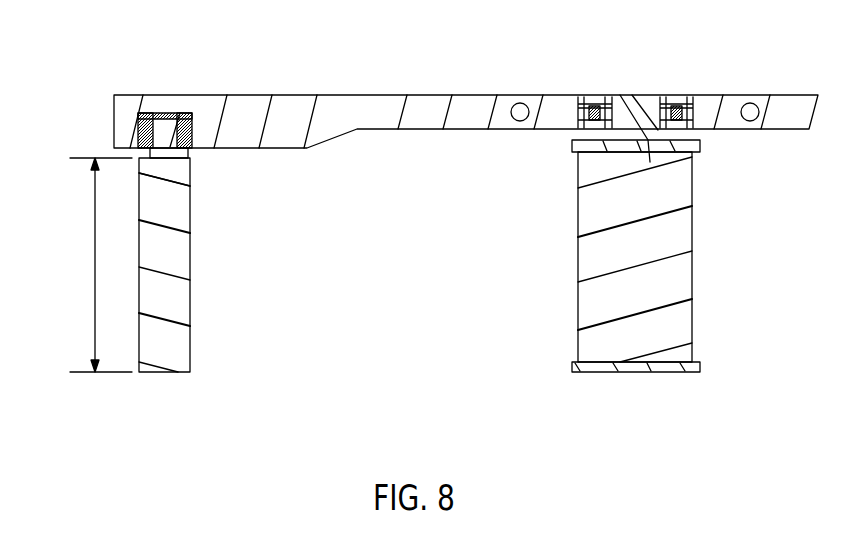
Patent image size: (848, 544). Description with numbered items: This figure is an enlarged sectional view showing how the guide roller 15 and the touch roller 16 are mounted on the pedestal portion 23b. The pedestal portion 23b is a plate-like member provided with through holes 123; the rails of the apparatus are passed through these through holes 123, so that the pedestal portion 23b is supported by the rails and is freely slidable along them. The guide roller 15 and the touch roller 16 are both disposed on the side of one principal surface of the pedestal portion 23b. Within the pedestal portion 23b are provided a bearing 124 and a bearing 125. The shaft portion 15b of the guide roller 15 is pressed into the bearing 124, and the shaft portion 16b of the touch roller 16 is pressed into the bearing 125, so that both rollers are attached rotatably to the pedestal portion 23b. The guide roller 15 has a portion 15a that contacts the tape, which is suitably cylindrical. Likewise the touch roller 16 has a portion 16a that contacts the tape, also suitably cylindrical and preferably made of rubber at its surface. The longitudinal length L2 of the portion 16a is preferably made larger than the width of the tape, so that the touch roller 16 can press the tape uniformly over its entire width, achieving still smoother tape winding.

The pedestal portion 23b is at (385, 103).
The through holes 123 is at (517, 102).
The bearing 124 is at (668, 97).
The bearing 125 is at (146, 112).
The touch roller 16 is at (216, 259).
The portion of the touch roller that contacts the tape 16a is at (160, 238).
The shaft portion 16b is at (159, 146).
The guide roller 15 is at (686, 233).
The portion of the guide roller that contacts the tape 15a is at (628, 230).
The shaft portion 15b is at (650, 162).
The longitudinal length L2 is at (95, 262).